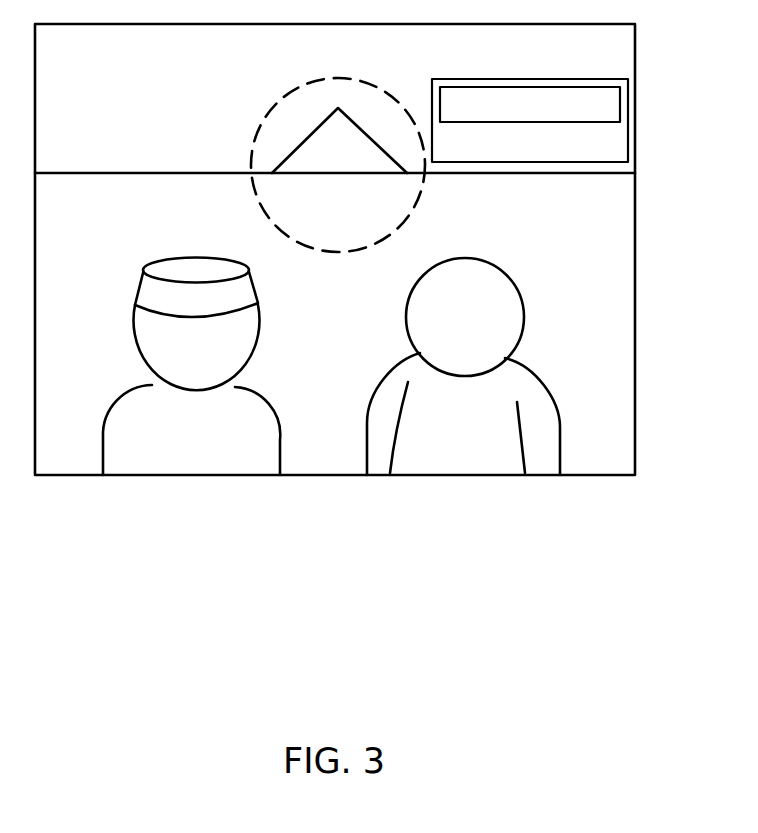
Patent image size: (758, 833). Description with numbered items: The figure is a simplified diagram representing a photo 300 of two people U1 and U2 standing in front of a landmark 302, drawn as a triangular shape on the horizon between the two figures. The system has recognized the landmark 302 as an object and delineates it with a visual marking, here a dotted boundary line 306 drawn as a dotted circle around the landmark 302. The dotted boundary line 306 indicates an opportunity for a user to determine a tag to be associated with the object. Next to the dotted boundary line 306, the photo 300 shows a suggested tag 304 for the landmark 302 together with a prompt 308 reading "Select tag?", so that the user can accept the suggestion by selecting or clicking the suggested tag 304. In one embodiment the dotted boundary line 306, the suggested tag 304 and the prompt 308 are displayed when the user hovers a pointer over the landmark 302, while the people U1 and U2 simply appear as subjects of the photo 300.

The photo 300 is at (353, 622).
The landmark 302 is at (328, 113).
The suggested tag 304 is at (620, 95).
The dotted boundary line 306 is at (382, 90).
The prompt 308 is at (552, 148).
The first person U1 is at (260, 328).
The second person U2 is at (523, 318).